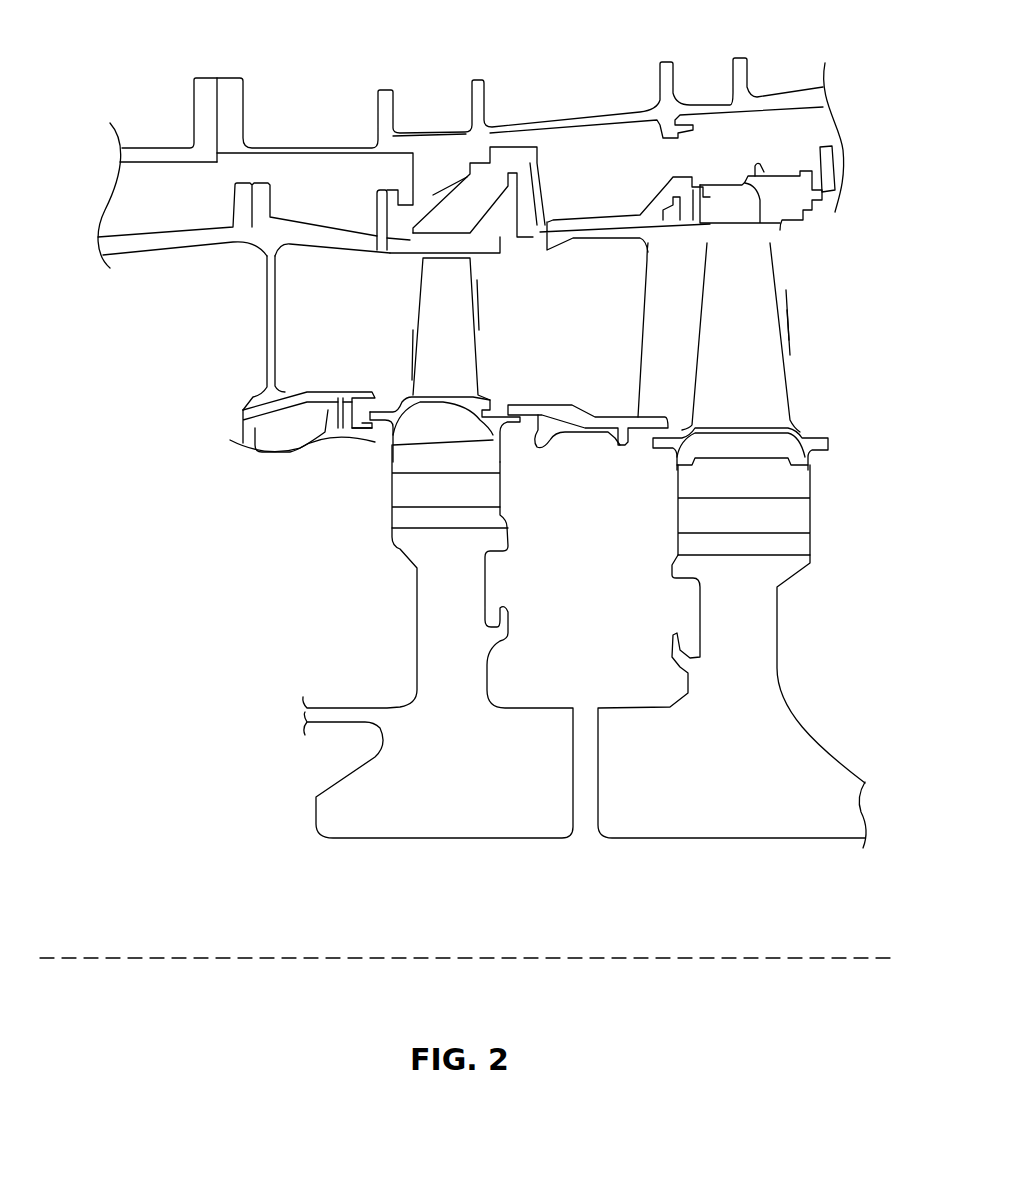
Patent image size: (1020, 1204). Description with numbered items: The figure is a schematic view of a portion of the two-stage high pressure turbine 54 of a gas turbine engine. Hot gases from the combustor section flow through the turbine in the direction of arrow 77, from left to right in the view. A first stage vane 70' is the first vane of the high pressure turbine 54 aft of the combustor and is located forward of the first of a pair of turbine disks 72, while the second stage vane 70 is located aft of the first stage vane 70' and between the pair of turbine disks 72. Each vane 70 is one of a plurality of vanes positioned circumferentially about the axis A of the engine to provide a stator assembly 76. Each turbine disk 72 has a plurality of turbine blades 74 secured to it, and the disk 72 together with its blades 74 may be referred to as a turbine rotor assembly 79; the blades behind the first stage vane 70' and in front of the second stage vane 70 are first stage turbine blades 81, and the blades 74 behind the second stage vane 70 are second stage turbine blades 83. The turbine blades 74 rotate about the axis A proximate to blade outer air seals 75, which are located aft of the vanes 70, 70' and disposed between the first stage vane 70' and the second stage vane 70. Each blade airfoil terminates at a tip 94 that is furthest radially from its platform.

The high pressure turbine 54 is at (783, 32).
The tip 94 is at (465, 253).
The stator assembly 76 is at (636, 206).
The blade outer air seals 75 is at (407, 252).
The turbine rotor assembly 79 is at (480, 304).
The high pressure turbine stage vane 70 is at (602, 345).
The first stage vane 70' is at (280, 354).
The arrow 77 is at (160, 321).
The first stage turbine blades 81 is at (410, 377).
The turbine blades 74 is at (458, 378).
The second stage turbine blades 83 is at (794, 333).
The turbine disks 72 is at (413, 705).
The axis A is at (768, 955).